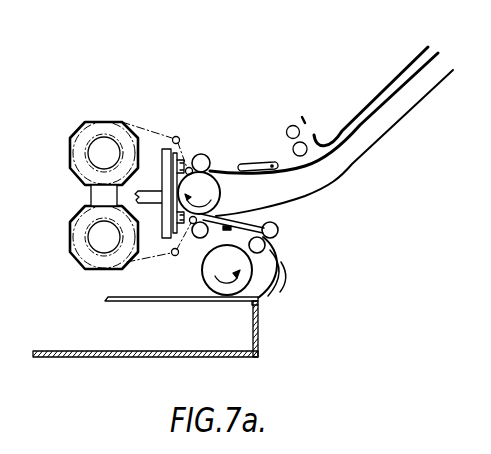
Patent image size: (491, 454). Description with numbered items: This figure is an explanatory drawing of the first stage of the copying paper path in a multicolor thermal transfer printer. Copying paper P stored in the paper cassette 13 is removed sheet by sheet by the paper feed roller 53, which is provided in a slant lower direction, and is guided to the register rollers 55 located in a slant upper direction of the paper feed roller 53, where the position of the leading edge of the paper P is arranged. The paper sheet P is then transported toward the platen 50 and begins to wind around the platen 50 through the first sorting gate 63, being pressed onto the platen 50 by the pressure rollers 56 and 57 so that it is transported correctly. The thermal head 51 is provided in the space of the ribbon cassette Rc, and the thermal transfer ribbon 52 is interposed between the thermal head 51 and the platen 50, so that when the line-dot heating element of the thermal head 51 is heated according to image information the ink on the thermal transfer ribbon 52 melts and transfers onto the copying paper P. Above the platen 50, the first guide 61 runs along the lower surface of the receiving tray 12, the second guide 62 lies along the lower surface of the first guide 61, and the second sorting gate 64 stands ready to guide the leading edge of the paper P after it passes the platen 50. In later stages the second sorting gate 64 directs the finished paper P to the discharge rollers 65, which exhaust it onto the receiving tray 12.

The ribbon cassette Rc is at (80, 137).
The receiving tray 12 is at (346, 124).
The paper cassette 13 is at (70, 358).
The platen 50 is at (209, 181).
The thermal head 51 is at (186, 150).
The thermal transfer ribbon 52 is at (171, 134).
The paper feed roller 53 is at (226, 296).
The register rollers 55 is at (279, 230).
The pressure roller 56 is at (196, 240).
The pressure roller 57 is at (199, 153).
The first guide 61 is at (373, 122).
The second guide 62 is at (415, 106).
The first sorting gate 63 is at (227, 231).
The second sorting gate 64 is at (262, 164).
The discharge rollers 65 is at (289, 126).
The copying paper P is at (154, 302).